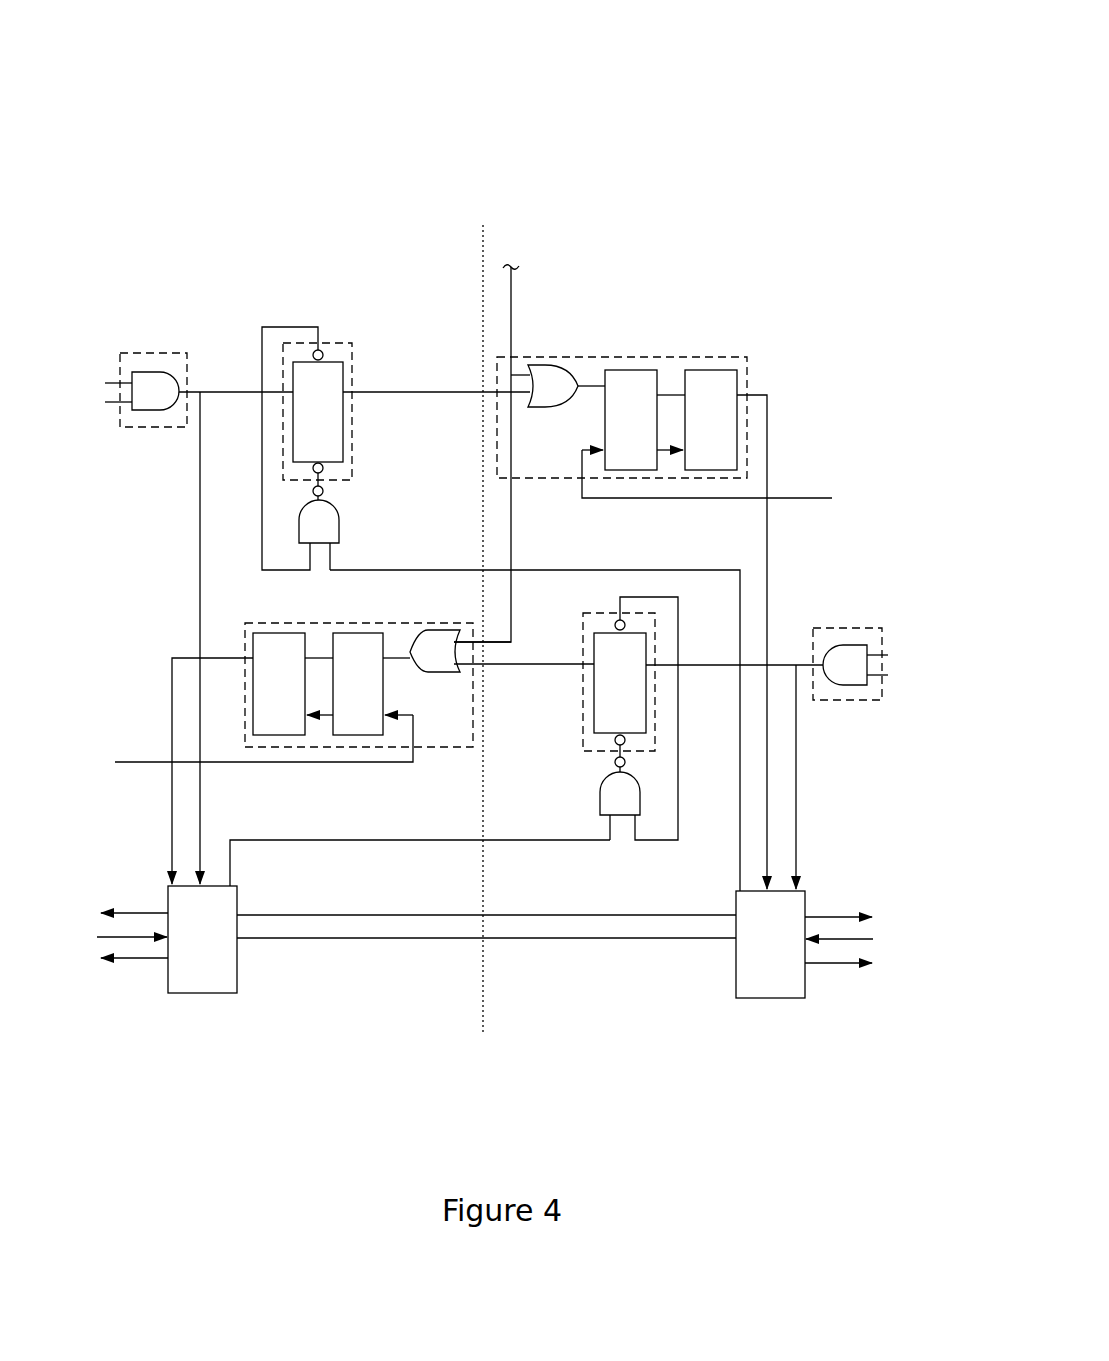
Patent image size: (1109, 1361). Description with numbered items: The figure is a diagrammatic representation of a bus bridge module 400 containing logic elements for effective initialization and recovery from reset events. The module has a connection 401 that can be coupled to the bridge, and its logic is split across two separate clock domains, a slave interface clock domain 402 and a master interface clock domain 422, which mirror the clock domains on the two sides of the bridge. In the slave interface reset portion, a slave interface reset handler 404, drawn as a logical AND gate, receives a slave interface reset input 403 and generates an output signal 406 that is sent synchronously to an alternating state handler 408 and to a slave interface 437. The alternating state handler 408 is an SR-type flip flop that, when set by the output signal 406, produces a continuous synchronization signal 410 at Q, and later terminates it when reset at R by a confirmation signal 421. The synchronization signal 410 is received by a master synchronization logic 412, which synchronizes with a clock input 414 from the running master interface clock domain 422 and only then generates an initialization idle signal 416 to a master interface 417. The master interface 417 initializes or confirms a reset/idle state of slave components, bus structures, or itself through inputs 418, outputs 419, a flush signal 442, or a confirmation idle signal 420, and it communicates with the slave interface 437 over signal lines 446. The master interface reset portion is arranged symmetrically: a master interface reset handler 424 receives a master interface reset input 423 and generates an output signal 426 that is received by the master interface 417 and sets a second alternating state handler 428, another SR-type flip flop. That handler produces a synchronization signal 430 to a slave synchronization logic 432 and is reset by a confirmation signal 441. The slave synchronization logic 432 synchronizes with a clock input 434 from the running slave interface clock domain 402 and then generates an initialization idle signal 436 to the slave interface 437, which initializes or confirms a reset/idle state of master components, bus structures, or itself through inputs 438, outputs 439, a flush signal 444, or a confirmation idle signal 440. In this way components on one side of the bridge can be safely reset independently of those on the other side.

The bus bridge module 400 is at (770, 58).
The connection 401 is at (512, 305).
The slave interface clock domain 402 is at (227, 205).
The slave interface reset input 403 is at (104, 372).
The slave interface reset handler 404 is at (130, 353).
The output signal 406 is at (203, 392).
The alternating state handler 408 is at (343, 343).
The synchronization signal 410 is at (396, 392).
The master synchronization logic 412 is at (630, 357).
The clock input 414 is at (800, 498).
The initialization idle signal 416 is at (771, 558).
The master interface 417 is at (770, 944).
The inputs 418 is at (870, 940).
The outputs 419 is at (835, 965).
The confirmation idle signal 420 is at (398, 570).
The confirmation signal 421 is at (322, 476).
The master interface clock domain 422 is at (589, 205).
The master interface reset input 423 is at (892, 645).
The master interface reset handler 424 is at (845, 628).
The output signal 426 is at (807, 664).
The alternating state handler 428 is at (598, 613).
The synchronization signal 430 is at (582, 665).
The slave synchronization logic 432 is at (280, 623).
The clock input 434 is at (150, 762).
The initialization idle signal 436 is at (172, 712).
The slave interface 437 is at (202, 939).
The inputs 438 is at (100, 938).
The outputs 439 is at (125, 961).
The confirmation idle signal 440 is at (400, 840).
The confirmation signal 441 is at (618, 748).
The flush signal 442 is at (843, 915).
The flush signal 444 is at (131, 912).
The signal lines 446 is at (560, 915).